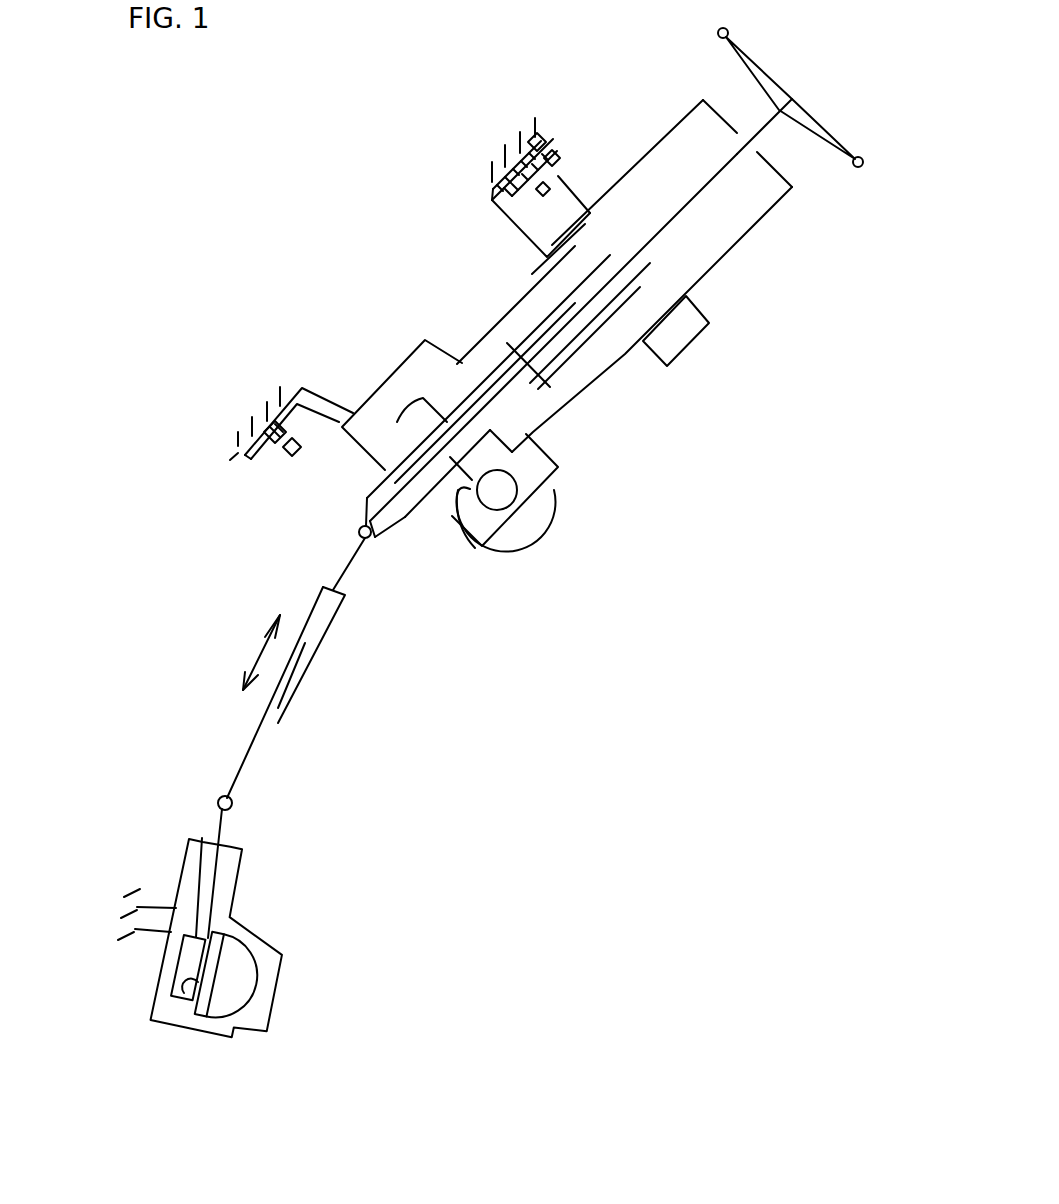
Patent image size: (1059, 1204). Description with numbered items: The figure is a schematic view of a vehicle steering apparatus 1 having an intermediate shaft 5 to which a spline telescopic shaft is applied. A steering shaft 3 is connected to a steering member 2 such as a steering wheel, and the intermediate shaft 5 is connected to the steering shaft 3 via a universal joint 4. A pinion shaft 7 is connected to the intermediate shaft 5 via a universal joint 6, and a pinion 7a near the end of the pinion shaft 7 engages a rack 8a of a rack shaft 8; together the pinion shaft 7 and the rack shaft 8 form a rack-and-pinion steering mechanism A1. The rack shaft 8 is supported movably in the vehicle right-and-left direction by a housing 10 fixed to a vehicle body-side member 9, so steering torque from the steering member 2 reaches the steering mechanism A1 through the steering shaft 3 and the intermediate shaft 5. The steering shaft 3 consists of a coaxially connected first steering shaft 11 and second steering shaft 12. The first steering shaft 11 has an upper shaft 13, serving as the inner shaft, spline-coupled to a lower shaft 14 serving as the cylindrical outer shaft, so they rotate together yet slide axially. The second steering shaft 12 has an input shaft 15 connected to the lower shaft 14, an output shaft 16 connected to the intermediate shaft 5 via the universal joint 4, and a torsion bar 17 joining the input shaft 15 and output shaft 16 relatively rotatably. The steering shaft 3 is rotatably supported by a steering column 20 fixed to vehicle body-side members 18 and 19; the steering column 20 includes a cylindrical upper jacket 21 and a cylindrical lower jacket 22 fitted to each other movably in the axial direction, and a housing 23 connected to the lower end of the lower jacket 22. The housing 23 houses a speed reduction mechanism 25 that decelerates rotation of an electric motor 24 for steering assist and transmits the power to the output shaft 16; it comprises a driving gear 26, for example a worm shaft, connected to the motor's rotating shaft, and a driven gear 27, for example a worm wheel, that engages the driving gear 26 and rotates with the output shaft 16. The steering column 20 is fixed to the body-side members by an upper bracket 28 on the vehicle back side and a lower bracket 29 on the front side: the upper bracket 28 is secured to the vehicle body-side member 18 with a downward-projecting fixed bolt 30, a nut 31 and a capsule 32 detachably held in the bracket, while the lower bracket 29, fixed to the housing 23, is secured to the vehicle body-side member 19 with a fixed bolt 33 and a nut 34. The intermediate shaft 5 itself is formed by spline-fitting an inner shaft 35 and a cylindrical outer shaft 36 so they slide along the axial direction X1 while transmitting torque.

The vehicle steering apparatus 1 is at (793, 75).
The steering member 2 is at (816, 118).
The steering shaft 3 is at (759, 126).
The universal joint 4 is at (358, 531).
The intermediate shaft 5 is at (315, 660).
The universal joint 6 is at (217, 801).
The pinion shaft 7 is at (223, 822).
The pinion 7a is at (187, 971).
The rack shaft 8 is at (260, 973).
The rack 8a is at (195, 993).
The vehicle body-side member 9 is at (128, 913).
The housing 10 is at (188, 860).
The first steering shaft 11 is at (697, 190).
The second steering shaft 12 is at (410, 457).
The upper shaft 13 is at (686, 206).
The lower shaft 14 is at (530, 332).
The input shaft 15 is at (517, 392).
The output shaft 16 is at (406, 520).
The torsion bar 17 is at (431, 428).
The vehicle body-side member 18 is at (492, 165).
The vehicle body-side member 19 is at (238, 442).
The steering column 20 is at (766, 213).
The upper jacket 21 is at (623, 357).
The lower jacket 22 is at (592, 375).
The housing 23 is at (398, 364).
The electric motor 24 is at (553, 527).
The speed reduction mechanism 25 is at (524, 488).
The driving gear 26 is at (503, 502).
The driven gear 27 is at (474, 548).
The upper bracket 28 is at (524, 217).
The lower bracket 29 is at (320, 400).
The fixed bolt 30 is at (551, 191).
The nut 31 is at (558, 160).
The capsule 32 is at (548, 146).
The fixed bolt 33 is at (300, 462).
The nut 34 is at (263, 460).
The inner shaft 35 is at (252, 763).
The outer shaft 36 is at (295, 697).
The axial direction X1 is at (265, 655).
The steering mechanism A1 is at (244, 1017).